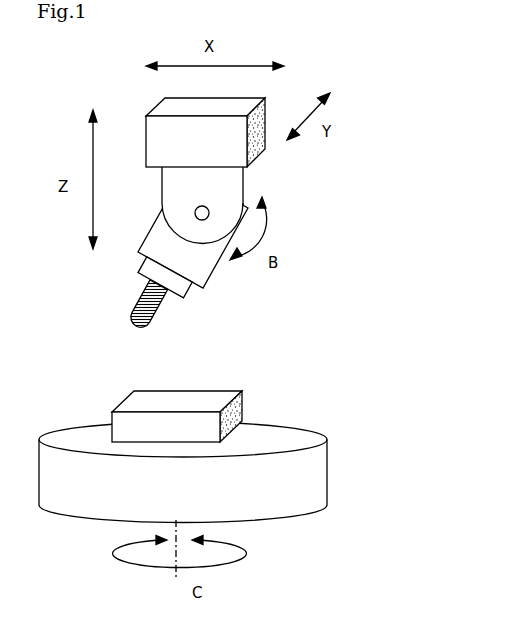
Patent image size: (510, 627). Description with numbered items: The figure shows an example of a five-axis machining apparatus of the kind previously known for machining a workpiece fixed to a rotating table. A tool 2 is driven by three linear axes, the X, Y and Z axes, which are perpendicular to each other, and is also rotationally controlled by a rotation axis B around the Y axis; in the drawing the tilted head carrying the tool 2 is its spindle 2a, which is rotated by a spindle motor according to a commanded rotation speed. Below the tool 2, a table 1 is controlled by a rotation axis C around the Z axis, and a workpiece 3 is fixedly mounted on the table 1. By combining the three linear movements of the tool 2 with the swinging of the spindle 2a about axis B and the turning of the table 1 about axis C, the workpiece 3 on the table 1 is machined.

The table 1 is at (327, 467).
The tool 2 is at (163, 305).
The spindle 2a is at (210, 275).
The workpiece 3 is at (112, 403).